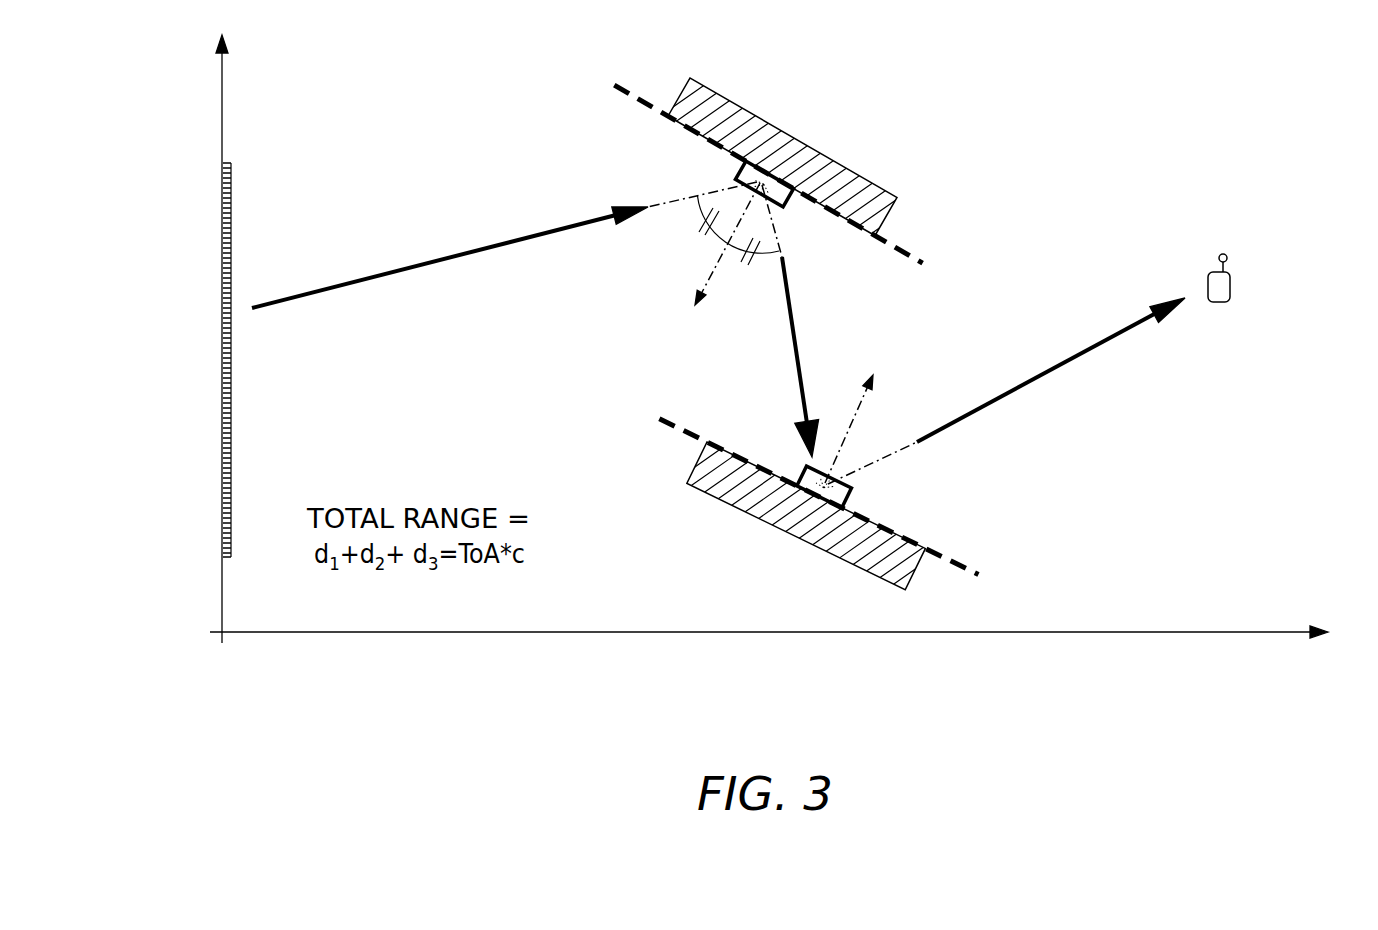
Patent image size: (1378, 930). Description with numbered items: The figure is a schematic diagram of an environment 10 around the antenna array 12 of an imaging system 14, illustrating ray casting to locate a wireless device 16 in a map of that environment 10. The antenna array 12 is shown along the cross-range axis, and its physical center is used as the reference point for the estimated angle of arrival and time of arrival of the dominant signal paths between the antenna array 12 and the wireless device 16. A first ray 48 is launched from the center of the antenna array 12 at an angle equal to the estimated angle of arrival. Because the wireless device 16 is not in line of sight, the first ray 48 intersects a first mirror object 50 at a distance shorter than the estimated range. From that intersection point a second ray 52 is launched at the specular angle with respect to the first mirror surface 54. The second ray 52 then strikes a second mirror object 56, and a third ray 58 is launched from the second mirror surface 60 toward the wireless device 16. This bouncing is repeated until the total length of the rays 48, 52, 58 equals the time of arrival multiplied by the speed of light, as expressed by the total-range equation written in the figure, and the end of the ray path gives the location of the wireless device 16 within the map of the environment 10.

The environment 10 is at (580, 355).
The antenna array 12 is at (229, 463).
The imaging system 14 is at (180, 197).
The wireless device 16 is at (1232, 286).
The first ray 48 is at (397, 270).
The first mirror object 50 is at (813, 151).
The second ray 52 is at (792, 297).
The first mirror surface 54 is at (648, 112).
The second mirror object 56 is at (797, 541).
The third ray 58 is at (970, 420).
The second mirror surface 60 is at (936, 551).